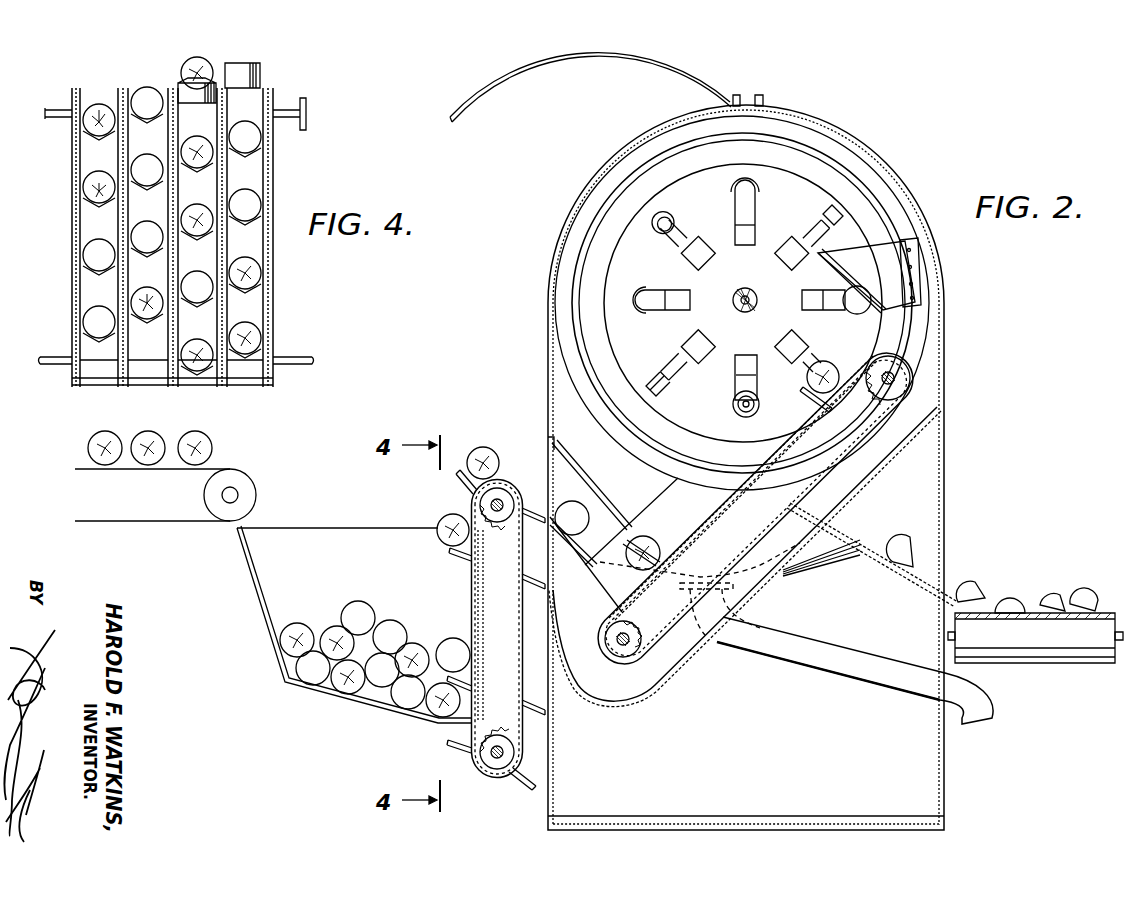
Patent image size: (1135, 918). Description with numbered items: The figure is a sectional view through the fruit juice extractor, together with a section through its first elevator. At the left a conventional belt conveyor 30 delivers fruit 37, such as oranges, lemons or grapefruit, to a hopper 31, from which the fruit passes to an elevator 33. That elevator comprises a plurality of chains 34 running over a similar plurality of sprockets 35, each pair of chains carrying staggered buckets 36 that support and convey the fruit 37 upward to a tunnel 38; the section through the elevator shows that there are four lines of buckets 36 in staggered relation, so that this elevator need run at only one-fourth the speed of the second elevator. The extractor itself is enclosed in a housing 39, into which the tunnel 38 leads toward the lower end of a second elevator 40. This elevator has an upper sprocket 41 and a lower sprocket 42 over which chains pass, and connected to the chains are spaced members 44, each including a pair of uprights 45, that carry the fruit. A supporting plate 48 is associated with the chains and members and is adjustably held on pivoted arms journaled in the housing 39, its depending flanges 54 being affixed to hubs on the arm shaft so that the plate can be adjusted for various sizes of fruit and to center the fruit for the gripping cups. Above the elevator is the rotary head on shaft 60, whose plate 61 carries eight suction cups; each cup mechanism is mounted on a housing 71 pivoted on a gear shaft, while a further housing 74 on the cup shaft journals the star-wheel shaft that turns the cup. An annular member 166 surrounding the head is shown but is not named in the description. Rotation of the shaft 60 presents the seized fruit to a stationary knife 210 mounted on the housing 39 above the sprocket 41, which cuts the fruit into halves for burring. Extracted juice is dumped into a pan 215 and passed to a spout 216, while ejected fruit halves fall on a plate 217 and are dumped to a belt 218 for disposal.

In FIG. 2, the belt conveyor 30 is at (172, 521).
In FIG. 2, the hopper 31 is at (268, 638).
In FIG. 4, the elevator 33 is at (270, 270).
In FIG. 2, the elevator 33 is at (481, 774).
In FIG. 2, the chains 34 is at (471, 598).
In FIG. 2, the sprockets 35 is at (483, 498).
In FIG. 4, the buckets 36 is at (182, 92).
In FIG. 2, the buckets 36 is at (462, 476).
In FIG. 2, the fruit 37 is at (473, 456).
In FIG. 2, the tunnel 38 is at (548, 472).
In FIG. 2, the housing 39 is at (908, 176).
In FIG. 2, the second elevator 40 is at (668, 638).
In FIG. 2, the upper sprocket 41 is at (912, 380).
In FIG. 2, the lower sprocket 42 is at (622, 655).
In FIG. 2, the spaced members 44 is at (798, 394).
In FIG. 2, the uprights 45 is at (690, 612).
In FIG. 2, the supporting plate 48 is at (730, 494).
In FIG. 4, the depending flanges 54 is at (218, 185).
In FIG. 2, the shaft 60 is at (734, 297).
In FIG. 2, the plate 61 is at (752, 297).
In FIG. 2, the housing 71 is at (740, 218).
In FIG. 2, the housing 74 is at (790, 244).
In FIG. 2, the drum ring 166 is at (850, 152).
In FIG. 2, the stationary knife 210 is at (845, 262).
In FIG. 2, the pan 215 is at (830, 548).
In FIG. 2, the spout 216 is at (826, 664).
In FIG. 2, the plate 217 is at (925, 585).
In FIG. 2, the belt 218 is at (1100, 612).